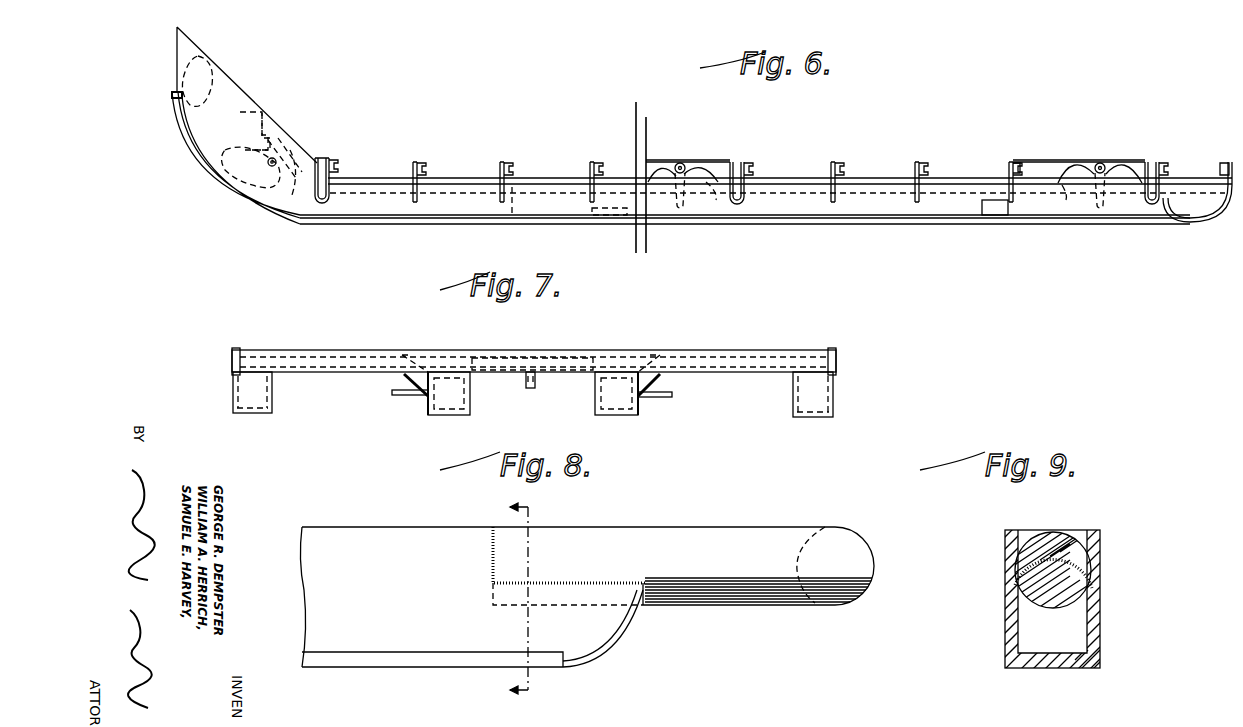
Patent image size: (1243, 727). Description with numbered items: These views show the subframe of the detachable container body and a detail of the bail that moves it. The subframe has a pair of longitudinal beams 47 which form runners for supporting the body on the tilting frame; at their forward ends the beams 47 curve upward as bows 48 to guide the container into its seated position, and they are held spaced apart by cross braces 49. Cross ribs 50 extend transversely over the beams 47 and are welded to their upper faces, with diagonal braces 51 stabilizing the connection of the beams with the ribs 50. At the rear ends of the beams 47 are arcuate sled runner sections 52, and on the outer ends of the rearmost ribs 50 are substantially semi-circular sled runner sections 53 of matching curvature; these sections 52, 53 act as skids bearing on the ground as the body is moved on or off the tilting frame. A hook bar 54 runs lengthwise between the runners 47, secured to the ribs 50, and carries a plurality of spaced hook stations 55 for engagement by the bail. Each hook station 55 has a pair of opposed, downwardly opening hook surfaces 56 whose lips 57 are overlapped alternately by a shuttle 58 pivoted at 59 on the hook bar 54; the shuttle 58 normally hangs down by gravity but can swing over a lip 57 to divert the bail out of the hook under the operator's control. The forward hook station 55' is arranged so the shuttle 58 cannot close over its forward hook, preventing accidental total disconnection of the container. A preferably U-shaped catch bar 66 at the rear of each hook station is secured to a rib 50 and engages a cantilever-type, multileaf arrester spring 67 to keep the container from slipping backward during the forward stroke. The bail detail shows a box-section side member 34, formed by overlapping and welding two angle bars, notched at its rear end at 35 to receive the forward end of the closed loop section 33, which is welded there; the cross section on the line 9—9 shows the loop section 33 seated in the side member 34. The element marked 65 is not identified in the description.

In FIG. 8, the loop section 33 is at (790, 545).
In FIG. 9, the loop section 33 is at (1065, 560).
In FIG. 8, the side member 34 is at (433, 640).
In FIG. 9, the side member 34 is at (1010, 668).
In FIG. 8, the notched portion 35 is at (628, 626).
In FIG. 9, the notched portion 35 is at (1010, 588).
In FIG. 6, the longitudinal beam 47 is at (891, 207).
In FIG. 7, the longitudinal beam 47 is at (428, 402).
In FIG. 6, the bow 48 is at (178, 122).
In FIG. 6, the cross brace 49 is at (275, 125).
In FIG. 6, the cross rib 50 is at (505, 162).
In FIG. 7, the cross rib 50 is at (315, 350).
In FIG. 7, the diagonal brace 51 is at (420, 372).
In FIG. 7, the sled runner section 52 is at (458, 398).
In FIG. 6, the sled runner section 53 is at (1186, 221).
In FIG. 7, the sled runner section 53 is at (255, 413).
In FIG. 6, the hook bar 54 is at (806, 200).
In FIG. 7, the hook bar 54 is at (531, 386).
In FIG. 6, the hook station 55 is at (895, 146).
In FIG. 6, the forward hook station 55' is at (330, 155).
In FIG. 6, the hook surface 56 is at (712, 172).
In FIG. 6, the hook lip 57 is at (718, 197).
In FIG. 6, the shuttle 58 is at (677, 210).
In FIG. 6, the pivot 59 is at (679, 162).
In FIG. 7, the stop bar 65 is at (392, 393).
In FIG. 6, the catch bar 66 is at (318, 212).
In FIG. 7, the arrester spring 67 is at (640, 405).
In FIG. 8, the section line 9— 9 is at (530, 598).